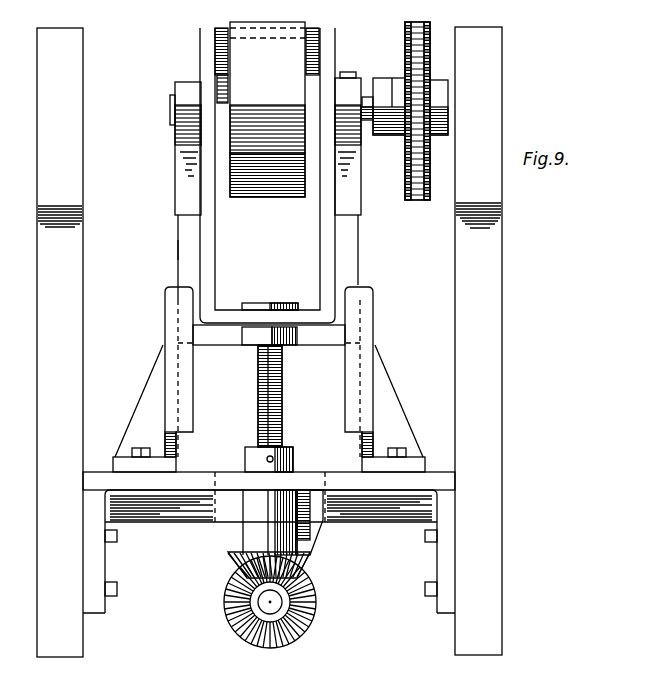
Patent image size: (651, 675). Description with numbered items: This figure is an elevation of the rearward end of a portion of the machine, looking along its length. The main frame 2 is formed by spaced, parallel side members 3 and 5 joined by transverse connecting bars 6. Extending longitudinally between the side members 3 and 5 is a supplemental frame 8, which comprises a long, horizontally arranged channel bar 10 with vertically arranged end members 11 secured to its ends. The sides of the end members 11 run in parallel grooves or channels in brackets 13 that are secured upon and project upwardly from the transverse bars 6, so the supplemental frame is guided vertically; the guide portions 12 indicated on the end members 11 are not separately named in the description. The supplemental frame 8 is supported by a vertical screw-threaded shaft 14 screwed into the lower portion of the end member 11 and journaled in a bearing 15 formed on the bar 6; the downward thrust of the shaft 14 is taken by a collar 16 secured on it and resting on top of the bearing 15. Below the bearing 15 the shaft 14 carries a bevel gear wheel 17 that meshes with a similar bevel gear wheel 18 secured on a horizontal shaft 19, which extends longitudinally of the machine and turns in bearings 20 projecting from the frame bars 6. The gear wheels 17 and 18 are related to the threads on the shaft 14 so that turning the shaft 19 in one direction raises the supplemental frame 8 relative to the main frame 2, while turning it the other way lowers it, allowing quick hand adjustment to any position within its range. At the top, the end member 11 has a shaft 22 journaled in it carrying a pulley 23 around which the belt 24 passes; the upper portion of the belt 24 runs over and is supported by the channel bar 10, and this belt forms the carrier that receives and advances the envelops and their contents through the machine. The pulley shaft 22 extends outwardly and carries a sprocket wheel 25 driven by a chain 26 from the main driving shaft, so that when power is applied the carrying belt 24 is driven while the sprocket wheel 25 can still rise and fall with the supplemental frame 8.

The main frame 2 is at (492, 478).
The side member 3 is at (37, 312).
The side member 5 is at (492, 325).
The transverse connecting bar 6 is at (92, 480).
The supplemental frame 8 is at (178, 205).
The channel bar 10 is at (312, 44).
The end member 11 is at (337, 233).
The guide rod 12 is at (178, 242).
The bracket 13 is at (165, 382).
The screw-threaded shaft 14 is at (258, 372).
The bearing 15 is at (228, 557).
The collar 16 is at (293, 450).
The bevel gear wheel 17 is at (230, 562).
The bevel gear wheel 18 is at (230, 615).
The horizontal shaft 19 is at (290, 602).
The bearing 20 is at (310, 545).
The pulley shaft 22 is at (367, 97).
The pulley 23 is at (232, 164).
The belt 24 is at (238, 62).
The sprocket wheel 25 is at (393, 138).
The chain 26 is at (410, 202).